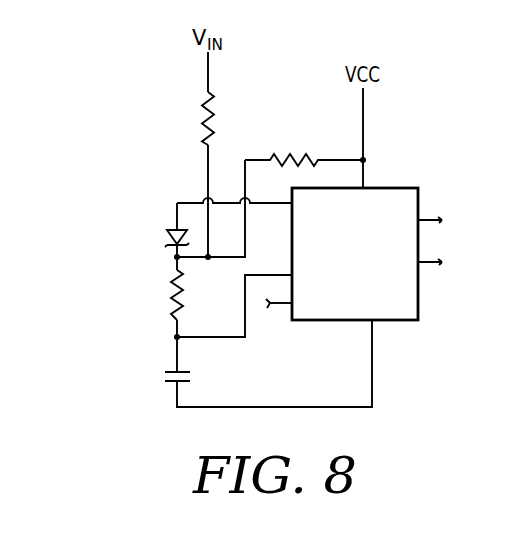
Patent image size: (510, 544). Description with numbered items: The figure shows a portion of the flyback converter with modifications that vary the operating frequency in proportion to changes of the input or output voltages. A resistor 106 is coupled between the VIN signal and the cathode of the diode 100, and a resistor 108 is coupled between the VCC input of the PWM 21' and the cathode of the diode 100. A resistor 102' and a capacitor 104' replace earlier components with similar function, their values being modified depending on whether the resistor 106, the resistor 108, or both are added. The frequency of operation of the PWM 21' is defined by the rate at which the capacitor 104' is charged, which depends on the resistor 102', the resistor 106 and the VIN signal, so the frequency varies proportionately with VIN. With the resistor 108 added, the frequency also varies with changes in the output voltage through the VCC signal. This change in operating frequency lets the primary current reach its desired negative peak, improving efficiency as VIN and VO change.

The resistor 106 is at (200, 118).
The resistor 108 is at (298, 156).
The diode 100 is at (168, 230).
The resistor 102' is at (131, 295).
The capacitor 104' is at (134, 372).
The PWM 21' is at (376, 236).